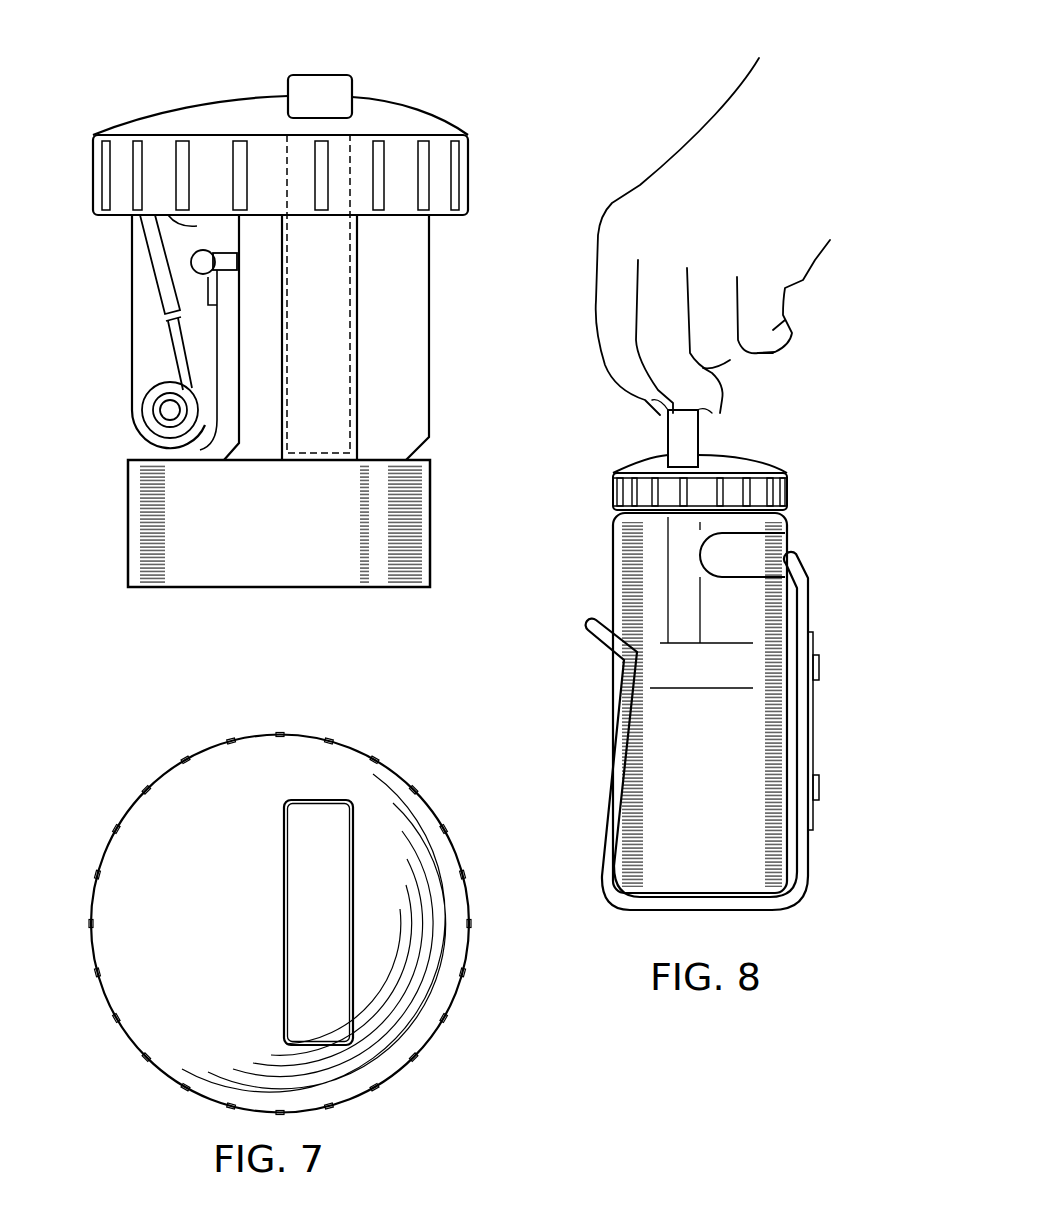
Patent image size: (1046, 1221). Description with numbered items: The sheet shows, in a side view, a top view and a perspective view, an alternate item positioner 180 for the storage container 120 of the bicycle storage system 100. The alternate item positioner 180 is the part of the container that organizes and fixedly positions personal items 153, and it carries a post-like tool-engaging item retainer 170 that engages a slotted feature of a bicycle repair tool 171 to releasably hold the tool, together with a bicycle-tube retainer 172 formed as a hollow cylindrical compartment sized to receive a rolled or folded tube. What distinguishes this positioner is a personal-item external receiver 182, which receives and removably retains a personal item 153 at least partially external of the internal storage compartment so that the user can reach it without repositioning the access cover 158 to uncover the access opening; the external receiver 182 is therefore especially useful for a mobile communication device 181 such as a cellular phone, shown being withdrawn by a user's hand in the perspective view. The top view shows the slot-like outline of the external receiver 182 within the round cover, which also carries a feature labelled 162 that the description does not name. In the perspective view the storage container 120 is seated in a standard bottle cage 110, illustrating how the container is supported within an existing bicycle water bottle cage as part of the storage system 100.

In FIG. 6, the bicycle storage system 100 is at (195, 50).
In FIG. 8, the bicycle storage system 100 is at (600, 393).
In FIG. 8, the bottle cage 110 is at (632, 912).
In FIG. 8, the storage container 120 is at (602, 538).
In FIG. 6, the personal item 153 is at (362, 80).
In FIG. 7, the personal item 153 is at (365, 810).
In FIG. 6, the access cover 158 is at (483, 170).
In FIG. 7, the access cover 158 is at (433, 1068).
In FIG. 8, the access cover 158 is at (612, 450).
In FIG. 6, the dome top 162 is at (392, 118).
In FIG. 7, the dome top 162 is at (435, 835).
In FIG. 8, the dome top 162 is at (765, 470).
In FIG. 6, the item retainer 170 is at (200, 265).
In FIG. 6, the bicycle repair tool 171 is at (132, 322).
In FIG. 6, the bicycle-tube retainer 172 is at (128, 512).
In FIG. 6, the alternate item positioner 180 is at (148, 595).
In FIG. 7, the alternate item positioner 180 is at (152, 752).
In FIG. 8, the alternate item positioner 180 is at (605, 478).
In FIG. 6, the mobile communication device 181 is at (314, 75).
In FIG. 7, the mobile communication device 181 is at (314, 805).
In FIG. 8, the mobile communication device 181 is at (699, 442).
In FIG. 6, the personal-item external receiver 182 is at (357, 296).
In FIG. 7, the personal-item external receiver 182 is at (284, 882).
In FIG. 8, the personal-item external receiver 182 is at (668, 580).